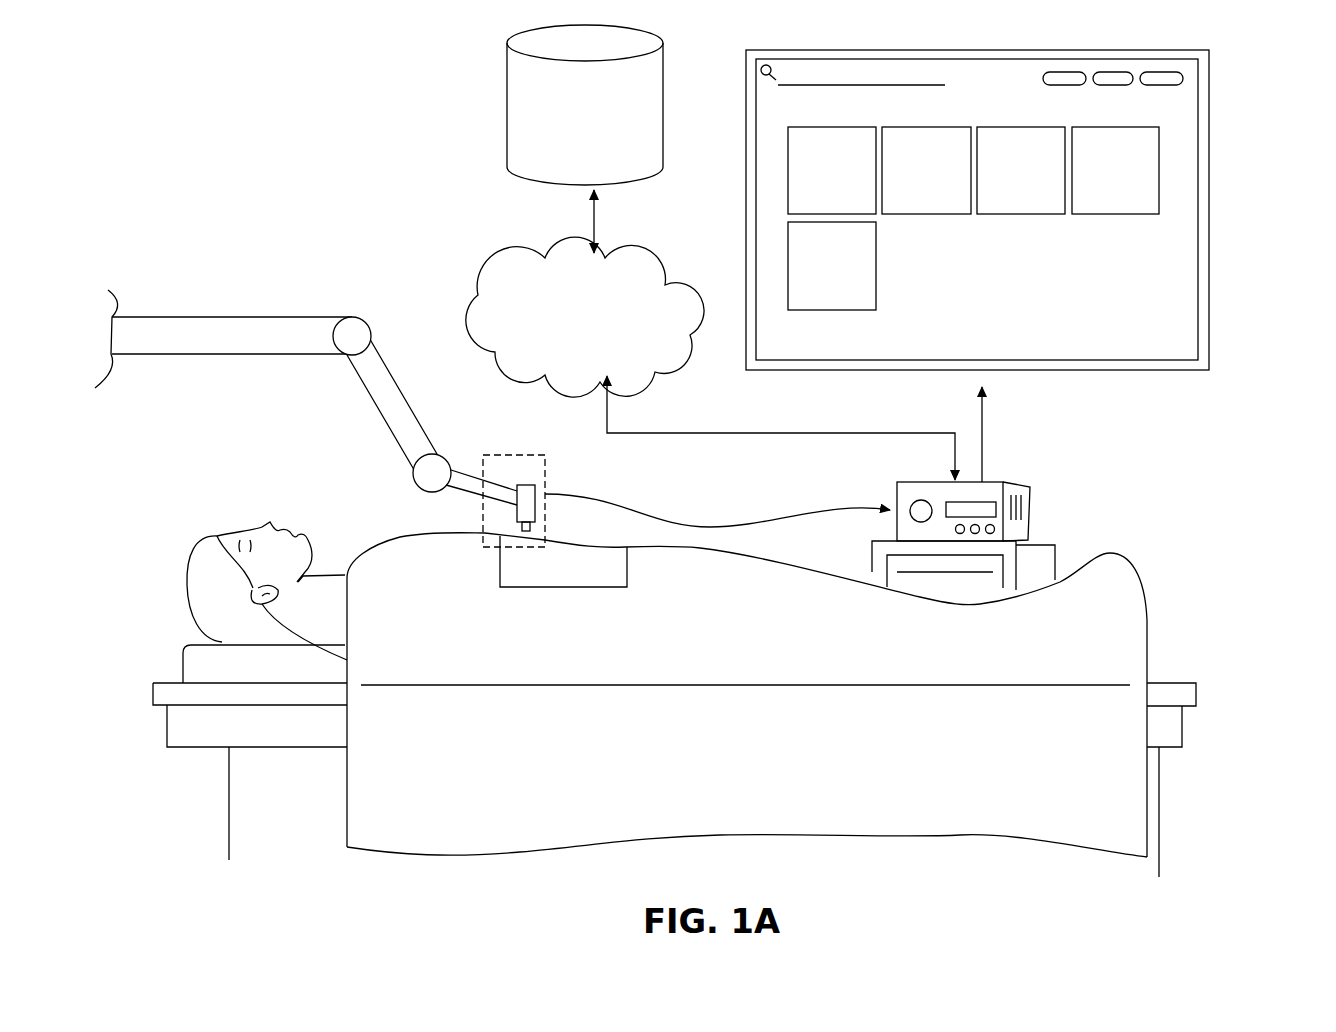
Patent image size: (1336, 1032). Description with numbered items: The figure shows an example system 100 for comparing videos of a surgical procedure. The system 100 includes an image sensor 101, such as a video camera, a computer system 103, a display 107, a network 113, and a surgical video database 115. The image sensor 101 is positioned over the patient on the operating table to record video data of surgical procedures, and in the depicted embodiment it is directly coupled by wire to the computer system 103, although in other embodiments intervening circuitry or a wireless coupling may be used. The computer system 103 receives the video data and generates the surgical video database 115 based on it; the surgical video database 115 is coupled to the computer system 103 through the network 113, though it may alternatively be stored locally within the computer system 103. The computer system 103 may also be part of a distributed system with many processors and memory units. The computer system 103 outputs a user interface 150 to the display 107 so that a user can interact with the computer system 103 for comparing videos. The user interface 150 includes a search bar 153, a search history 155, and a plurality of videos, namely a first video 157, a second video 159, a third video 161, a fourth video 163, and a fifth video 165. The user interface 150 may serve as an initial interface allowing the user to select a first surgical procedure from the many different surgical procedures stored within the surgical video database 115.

The system 100 is at (352, 133).
The image sensor 101 is at (483, 522).
The computer system 103 is at (1031, 512).
The display 107 is at (1209, 222).
The network 113 is at (585, 317).
The surgical video database 115 is at (585, 139).
The user interface 150 is at (987, 66).
The search bar 153 is at (776, 68).
The search history 155 is at (1131, 64).
The first video 157 is at (832, 170).
The second video 159 is at (926, 170).
The third video 161 is at (1021, 170).
The fourth video 163 is at (1115, 170).
The fifth video 165 is at (832, 266).